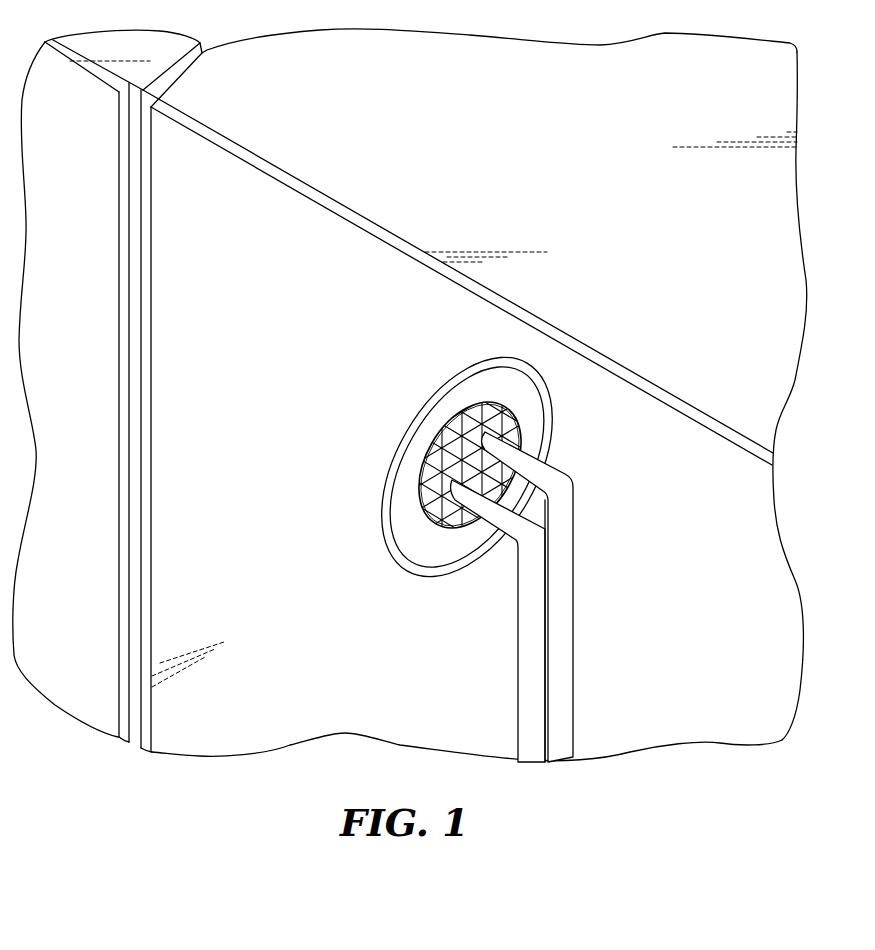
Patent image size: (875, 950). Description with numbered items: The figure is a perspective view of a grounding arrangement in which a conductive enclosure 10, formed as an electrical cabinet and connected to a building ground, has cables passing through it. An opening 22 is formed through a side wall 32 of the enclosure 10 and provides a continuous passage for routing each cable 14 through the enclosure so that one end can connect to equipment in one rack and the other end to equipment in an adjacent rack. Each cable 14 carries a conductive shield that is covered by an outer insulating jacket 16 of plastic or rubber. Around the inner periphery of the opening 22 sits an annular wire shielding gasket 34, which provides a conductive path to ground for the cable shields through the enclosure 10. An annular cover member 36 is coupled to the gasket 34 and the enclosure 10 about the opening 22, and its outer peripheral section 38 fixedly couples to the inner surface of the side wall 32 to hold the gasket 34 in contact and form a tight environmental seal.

The conductive enclosure 10 is at (770, 422).
The cable 14 is at (575, 532).
The outer insulating jacket 16 is at (525, 647).
The opening 22 is at (433, 446).
The side wall 32 is at (177, 717).
The annular wire shielding gasket 34 is at (463, 533).
The annular cover member 36 is at (400, 513).
The outer peripheral section 38 is at (390, 557).